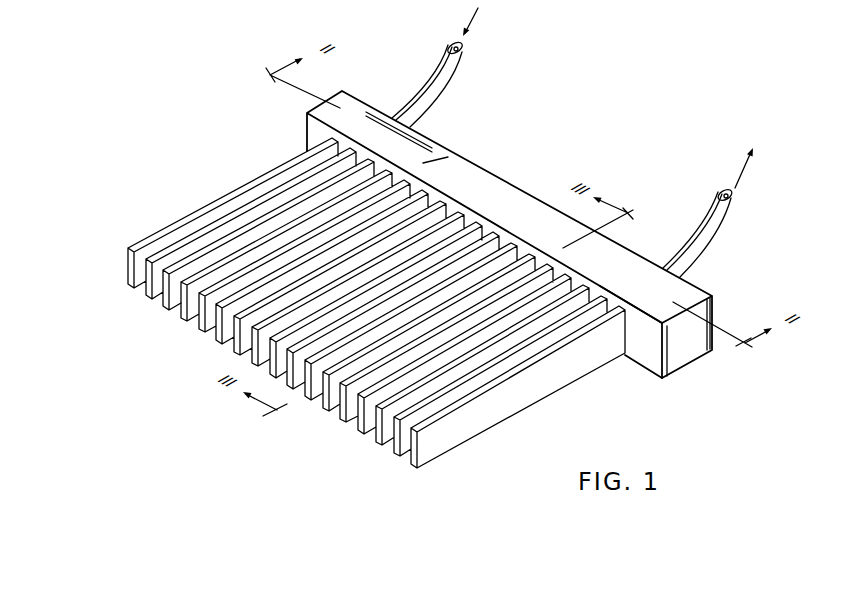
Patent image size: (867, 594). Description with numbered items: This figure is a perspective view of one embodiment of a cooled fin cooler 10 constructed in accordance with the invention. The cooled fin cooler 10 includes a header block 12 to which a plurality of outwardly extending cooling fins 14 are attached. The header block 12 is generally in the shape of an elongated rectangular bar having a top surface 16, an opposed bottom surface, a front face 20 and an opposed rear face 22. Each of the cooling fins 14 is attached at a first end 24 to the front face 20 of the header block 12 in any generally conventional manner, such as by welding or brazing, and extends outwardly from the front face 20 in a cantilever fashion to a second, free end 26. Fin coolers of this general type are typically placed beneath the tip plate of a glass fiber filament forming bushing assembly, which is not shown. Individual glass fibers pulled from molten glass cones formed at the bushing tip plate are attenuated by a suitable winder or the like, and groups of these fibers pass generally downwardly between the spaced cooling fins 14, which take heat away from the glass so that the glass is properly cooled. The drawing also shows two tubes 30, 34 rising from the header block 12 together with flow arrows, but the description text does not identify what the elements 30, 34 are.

The cooled fin cooler 10 is at (212, 169).
The header block 12 is at (503, 153).
The cooling fins 14 is at (367, 444).
The top surface 16 is at (432, 149).
The front face 20 is at (633, 358).
The rear face 22 is at (720, 301).
The first end 24 is at (628, 334).
The second, free end 26 is at (164, 306).
The inlet tube 30 is at (453, 80).
The outlet tube 34 is at (728, 220).